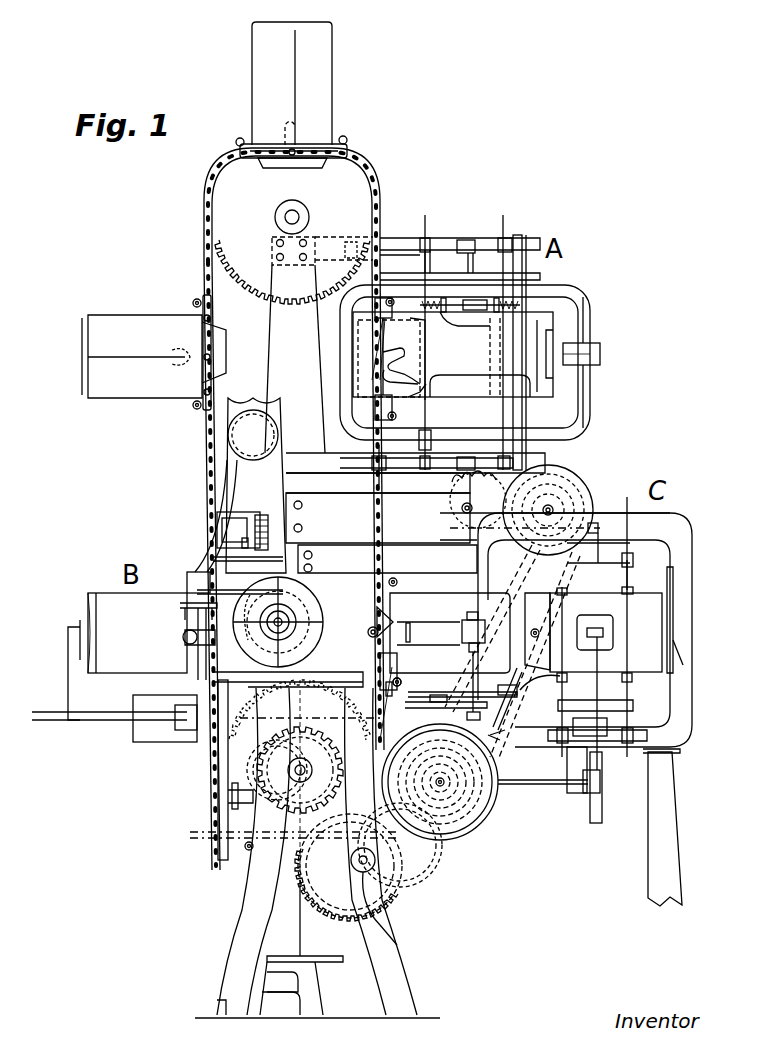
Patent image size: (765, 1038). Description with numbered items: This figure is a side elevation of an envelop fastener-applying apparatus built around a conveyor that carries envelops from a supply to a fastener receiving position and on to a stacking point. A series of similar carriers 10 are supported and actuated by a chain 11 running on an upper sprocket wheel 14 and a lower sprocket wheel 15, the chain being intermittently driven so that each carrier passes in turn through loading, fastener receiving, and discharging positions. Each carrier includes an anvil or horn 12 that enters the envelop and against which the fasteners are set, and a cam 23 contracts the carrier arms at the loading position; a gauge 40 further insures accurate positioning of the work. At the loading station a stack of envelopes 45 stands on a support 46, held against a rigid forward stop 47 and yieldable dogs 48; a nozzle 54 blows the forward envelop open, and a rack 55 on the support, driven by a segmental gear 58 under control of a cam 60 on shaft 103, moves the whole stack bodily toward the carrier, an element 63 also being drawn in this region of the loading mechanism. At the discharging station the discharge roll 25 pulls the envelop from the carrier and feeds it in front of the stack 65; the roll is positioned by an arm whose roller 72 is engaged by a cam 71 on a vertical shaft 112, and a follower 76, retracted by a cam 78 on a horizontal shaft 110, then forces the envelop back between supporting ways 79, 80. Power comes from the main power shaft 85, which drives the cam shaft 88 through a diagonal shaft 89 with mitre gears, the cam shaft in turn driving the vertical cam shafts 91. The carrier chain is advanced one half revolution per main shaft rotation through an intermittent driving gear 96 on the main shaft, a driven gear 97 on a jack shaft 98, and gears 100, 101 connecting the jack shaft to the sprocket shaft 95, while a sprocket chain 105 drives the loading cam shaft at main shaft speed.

The carrier 10 is at (347, 142).
The chain 11 is at (206, 455).
The anvil or horn 12 is at (392, 355).
The sprocket wheel 14 is at (228, 184).
The sprocket wheel 15 is at (235, 760).
The cam 23 is at (372, 362).
The discharge roll 25 is at (466, 628).
The gauge 40 is at (68, 680).
The stack of envelopes 45 is at (555, 338).
The support 46 is at (585, 400).
The rigid forward stop 47 is at (450, 380).
The yieldable dog 48 is at (502, 324).
The nozzle 54 is at (408, 350).
The rack 55 is at (462, 480).
The segmental gear 58 is at (461, 507).
The cam 60 is at (575, 482).
The rod with springs 63 is at (470, 296).
The stack 65 is at (646, 608).
The cam 71 is at (414, 708).
The roller 72 is at (448, 702).
The follower 76 is at (594, 615).
The cam 78 is at (602, 805).
The supporting way 79 is at (652, 673).
The supporting way 80 is at (629, 590).
The main power shaft 85 is at (442, 786).
The cam shaft 88 is at (282, 620).
The diagonal shaft 89 is at (392, 673).
The vertical cam shaft 91 is at (200, 660).
The shaft 95 is at (302, 766).
The intermittent driving gear 96 is at (432, 840).
The driven gear 97 is at (410, 900).
The jack shaft 98 is at (388, 915).
The gear 100 is at (318, 947).
The gear 101 is at (280, 805).
The shaft 103 is at (552, 504).
The sprocket chain 105 is at (512, 652).
The horizontal shaft 110 is at (550, 782).
The vertical shaft 112 is at (498, 740).